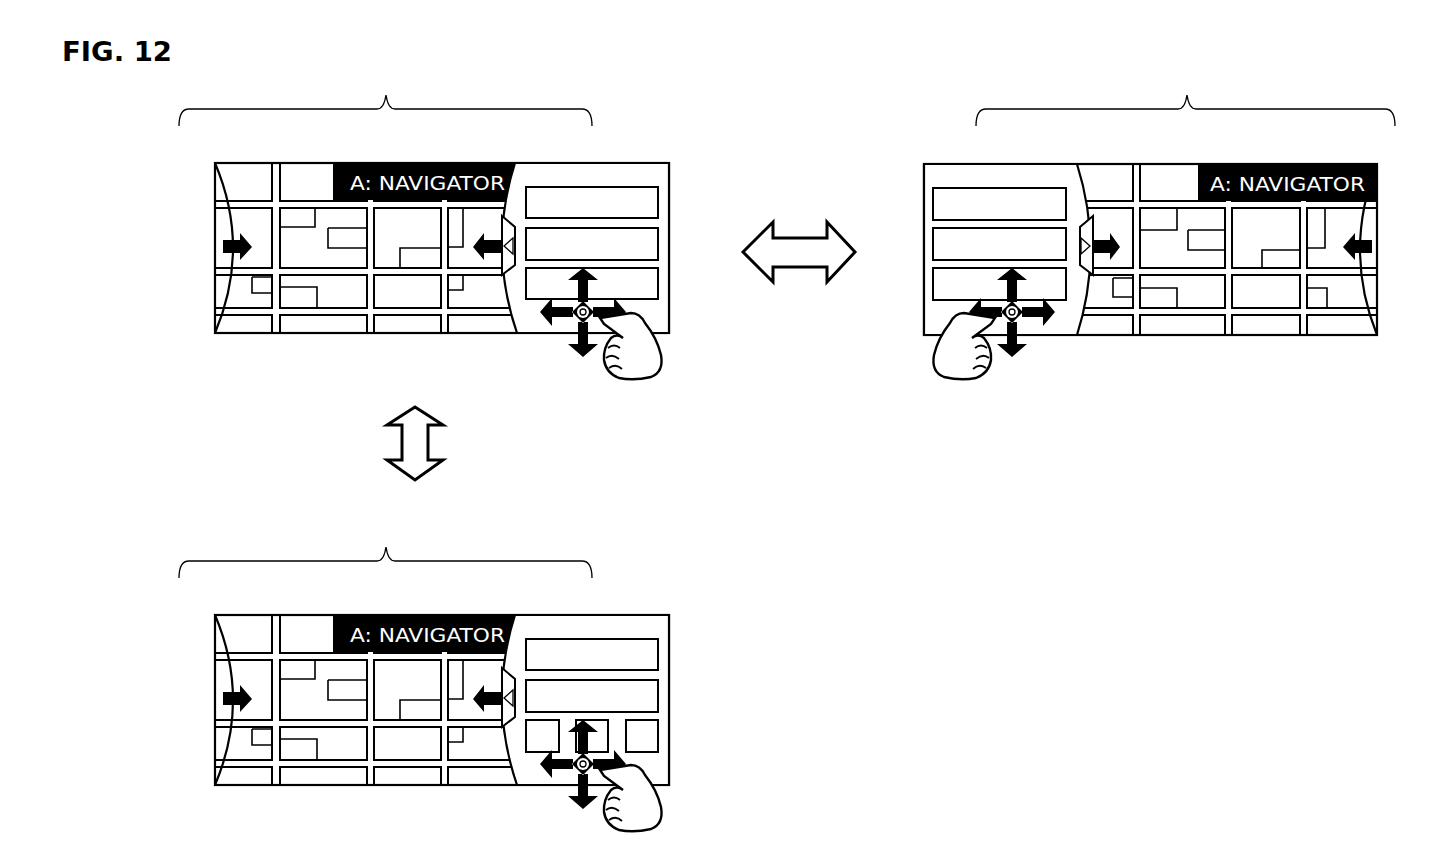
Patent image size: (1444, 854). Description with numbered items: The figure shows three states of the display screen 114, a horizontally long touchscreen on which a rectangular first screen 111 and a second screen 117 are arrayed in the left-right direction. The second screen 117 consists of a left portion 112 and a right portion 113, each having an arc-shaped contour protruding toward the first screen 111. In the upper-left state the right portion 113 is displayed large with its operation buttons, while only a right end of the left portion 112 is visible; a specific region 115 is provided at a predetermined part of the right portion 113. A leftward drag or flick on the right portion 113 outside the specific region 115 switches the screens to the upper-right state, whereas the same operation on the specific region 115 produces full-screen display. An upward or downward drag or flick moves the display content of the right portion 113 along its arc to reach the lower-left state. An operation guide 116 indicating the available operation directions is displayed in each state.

The first screen 111 is at (345, 333).
The left portion 112 is at (215, 182).
The right portion 113 is at (556, 166).
The display screen 114 is at (669, 303).
The specific region 115 is at (505, 264).
The operation guide 116 is at (570, 322).
The second screen 117 is at (787, 322).